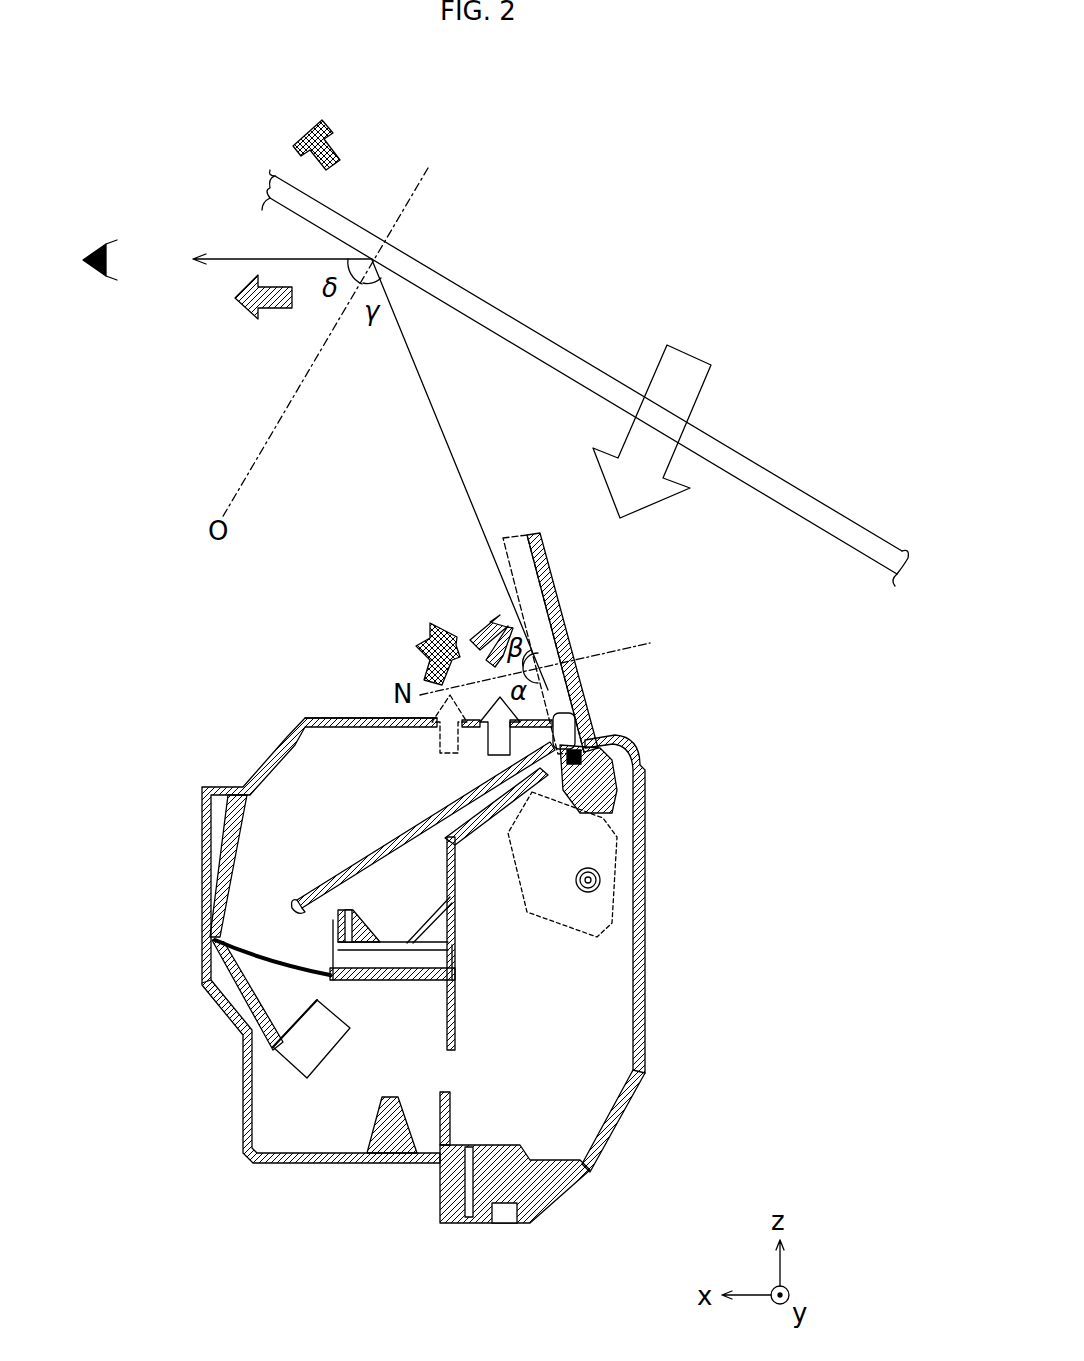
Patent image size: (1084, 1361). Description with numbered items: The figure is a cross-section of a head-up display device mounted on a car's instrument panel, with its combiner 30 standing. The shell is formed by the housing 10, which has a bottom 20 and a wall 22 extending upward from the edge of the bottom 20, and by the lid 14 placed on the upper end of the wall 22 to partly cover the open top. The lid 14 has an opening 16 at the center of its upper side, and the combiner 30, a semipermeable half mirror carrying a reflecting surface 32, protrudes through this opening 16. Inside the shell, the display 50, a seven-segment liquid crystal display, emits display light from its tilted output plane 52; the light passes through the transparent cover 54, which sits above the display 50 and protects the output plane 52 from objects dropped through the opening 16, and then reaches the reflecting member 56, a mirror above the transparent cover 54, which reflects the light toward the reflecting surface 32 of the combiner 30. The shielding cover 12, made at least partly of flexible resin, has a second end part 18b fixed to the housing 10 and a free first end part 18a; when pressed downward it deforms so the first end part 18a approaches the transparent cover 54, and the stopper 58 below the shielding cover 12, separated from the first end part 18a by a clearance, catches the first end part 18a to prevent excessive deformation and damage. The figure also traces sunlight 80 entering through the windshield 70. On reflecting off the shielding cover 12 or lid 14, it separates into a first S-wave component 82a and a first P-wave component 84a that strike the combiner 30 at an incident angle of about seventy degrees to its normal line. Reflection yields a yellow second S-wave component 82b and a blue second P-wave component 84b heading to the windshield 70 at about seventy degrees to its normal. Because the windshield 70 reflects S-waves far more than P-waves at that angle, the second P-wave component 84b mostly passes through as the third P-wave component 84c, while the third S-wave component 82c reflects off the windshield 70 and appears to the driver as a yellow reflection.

The housing 10 is at (439, 974).
The shielding cover 12 is at (489, 796).
The lid 14 is at (646, 850).
The opening 16 is at (350, 718).
The first end part 18a is at (315, 885).
The second end part 18b is at (548, 730).
The bottom 20 is at (355, 1163).
The wall 22 is at (646, 1045).
The combiner 30 is at (560, 595).
The reflecting surface 32 is at (520, 545).
The display 50 is at (350, 1020).
The output plane 52 is at (297, 1023).
The transparent cover 54 is at (240, 975).
The reflecting member 56 is at (228, 852).
The stopper 58 is at (345, 905).
The windshield 70 is at (825, 505).
The sunlight 80 is at (690, 355).
The first S-wave component 82a is at (488, 748).
The second S-wave component 82b is at (483, 615).
The third S-wave component 82c is at (272, 318).
The first P-wave component 84a is at (435, 733).
The second P-wave component 84b is at (430, 640).
The third P-wave component 84c is at (338, 163).